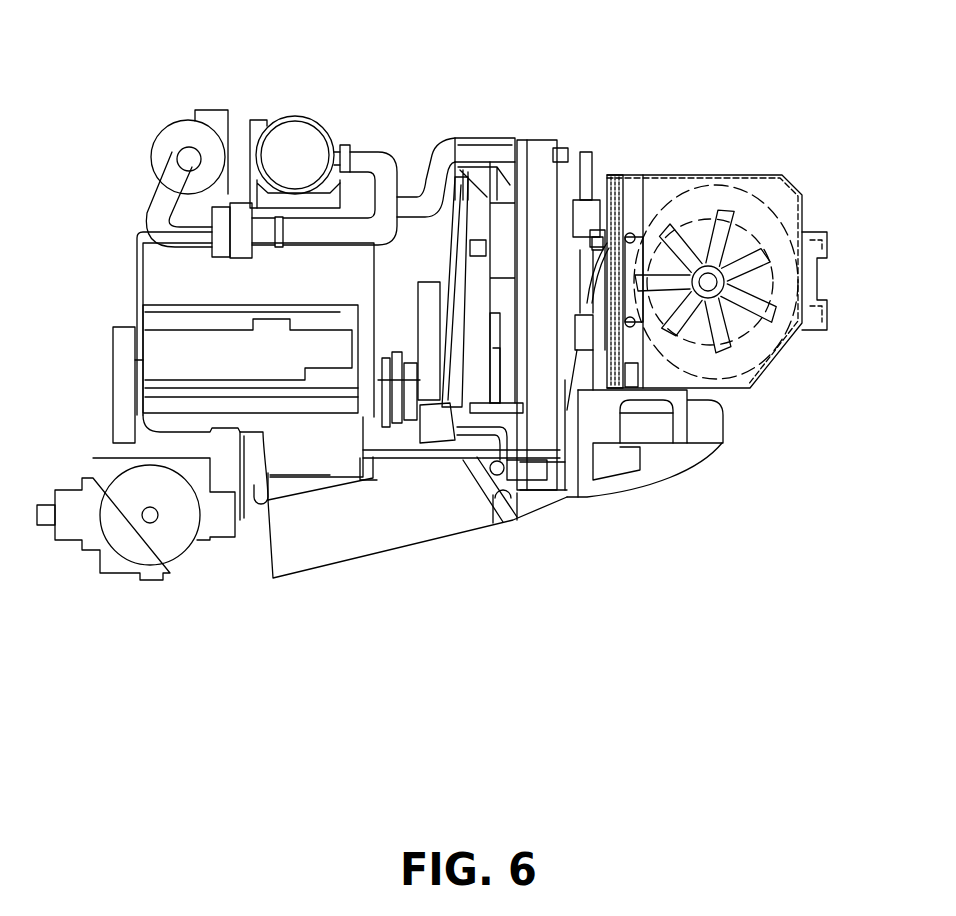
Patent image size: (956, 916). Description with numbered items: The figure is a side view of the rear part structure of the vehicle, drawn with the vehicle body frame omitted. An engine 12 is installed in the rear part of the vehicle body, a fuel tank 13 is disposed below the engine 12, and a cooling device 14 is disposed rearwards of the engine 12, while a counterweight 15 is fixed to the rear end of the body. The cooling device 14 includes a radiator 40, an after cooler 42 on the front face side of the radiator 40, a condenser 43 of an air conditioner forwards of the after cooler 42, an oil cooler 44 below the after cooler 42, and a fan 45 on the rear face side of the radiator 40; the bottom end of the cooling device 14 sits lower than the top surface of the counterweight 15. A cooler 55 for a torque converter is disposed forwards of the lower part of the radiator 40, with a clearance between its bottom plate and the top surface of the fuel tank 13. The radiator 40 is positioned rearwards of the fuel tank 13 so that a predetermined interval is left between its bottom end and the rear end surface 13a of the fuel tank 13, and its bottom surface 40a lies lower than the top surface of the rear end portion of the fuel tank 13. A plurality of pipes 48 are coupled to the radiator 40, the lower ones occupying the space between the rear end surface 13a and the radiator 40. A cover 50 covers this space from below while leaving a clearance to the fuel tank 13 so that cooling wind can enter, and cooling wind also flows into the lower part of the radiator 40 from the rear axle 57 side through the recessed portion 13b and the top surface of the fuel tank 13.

The engine 12 is at (272, 104).
The fuel tank 13 is at (330, 550).
The rear end surface 13a is at (518, 523).
The recessed portion 13b is at (270, 530).
The cooling device 14 is at (507, 112).
The counterweight 15 is at (708, 458).
The radiator 40 is at (538, 177).
The bottom surface 40a is at (542, 495).
The after cooler 42 is at (452, 138).
The condenser 43 is at (450, 140).
The oil cooler 44 is at (493, 352).
The fan 45 is at (612, 173).
The pipes 48 is at (462, 442).
The cover 50 is at (538, 500).
The cooler for torque converter 55 is at (407, 445).
The rear axle 57 is at (137, 540).